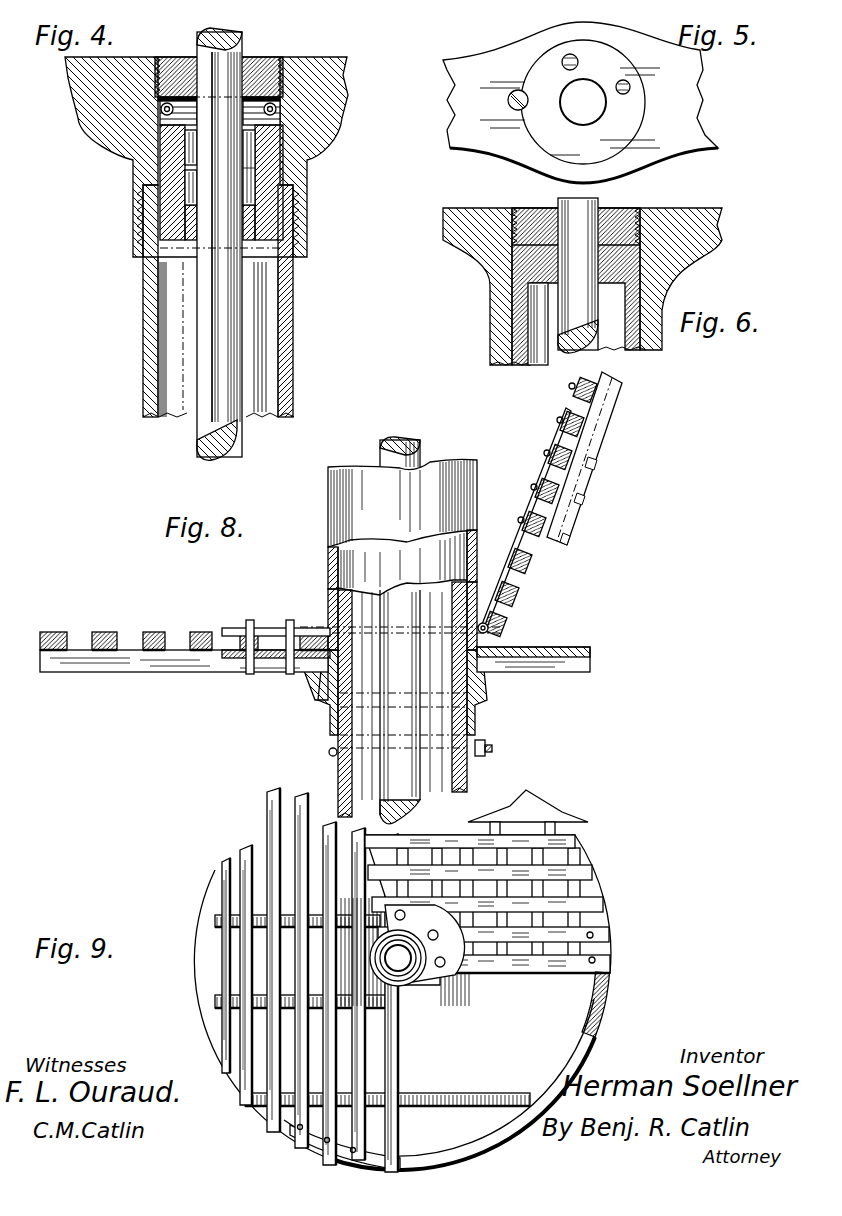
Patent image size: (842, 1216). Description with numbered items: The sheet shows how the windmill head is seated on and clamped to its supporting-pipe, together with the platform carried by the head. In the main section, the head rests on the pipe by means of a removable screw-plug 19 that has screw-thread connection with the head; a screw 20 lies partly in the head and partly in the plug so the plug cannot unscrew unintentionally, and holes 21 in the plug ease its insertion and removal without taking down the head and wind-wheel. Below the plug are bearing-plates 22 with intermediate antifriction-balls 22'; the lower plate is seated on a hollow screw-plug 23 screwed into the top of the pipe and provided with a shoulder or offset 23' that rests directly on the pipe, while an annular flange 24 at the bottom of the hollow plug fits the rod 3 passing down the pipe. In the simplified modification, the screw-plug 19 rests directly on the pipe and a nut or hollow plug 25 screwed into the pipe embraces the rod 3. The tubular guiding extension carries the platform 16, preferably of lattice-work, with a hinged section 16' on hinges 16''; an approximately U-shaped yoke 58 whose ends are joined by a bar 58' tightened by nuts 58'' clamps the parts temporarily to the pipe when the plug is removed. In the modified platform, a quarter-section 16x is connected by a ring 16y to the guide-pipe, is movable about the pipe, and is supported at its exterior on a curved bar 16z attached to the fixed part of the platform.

In FIG. 4, the rod 3 is at (219, 244).
In FIG. 6, the rod 3 is at (578, 275).
In FIG. 8, the rod 3 is at (400, 630).
In FIG. 8, the platform 16 is at (185, 662).
In FIG. 9, the platform 16 is at (342, 979).
In FIG. 8, the hinged section of the platform 16' is at (551, 504).
In FIG. 8, the hinges 16'' is at (518, 633).
In FIG. 9, the quarter-section 16x is at (497, 887).
In FIG. 9, the ring 16y is at (430, 985).
In FIG. 9, the curved bar 16z is at (575, 1080).
In FIG. 4, the removable screw-plug 19 is at (262, 62).
In FIG. 5, the removable screw-plug 19 is at (580, 102).
In FIG. 6, the removable screw-plug 19 is at (545, 218).
In FIG. 5, the screw 20 is at (508, 99).
In FIG. 5, the holes 21 is at (617, 81).
In FIG. 4, the bearing-plates 22 is at (126, 137).
In FIG. 4, the antifriction-balls 22' is at (309, 122).
In FIG. 4, the hollow screw-plug 23 is at (129, 163).
In FIG. 4, the shoulder or offset 23' is at (208, 173).
In FIG. 4, the annular flange 24 is at (153, 262).
In FIG. 6, the nut or hollow plug 25 is at (535, 288).
In FIG. 8, the U-shaped yoke 58 is at (306, 755).
In FIG. 8, the bar 58' is at (503, 740).
In FIG. 8, the nuts 58'' is at (510, 763).